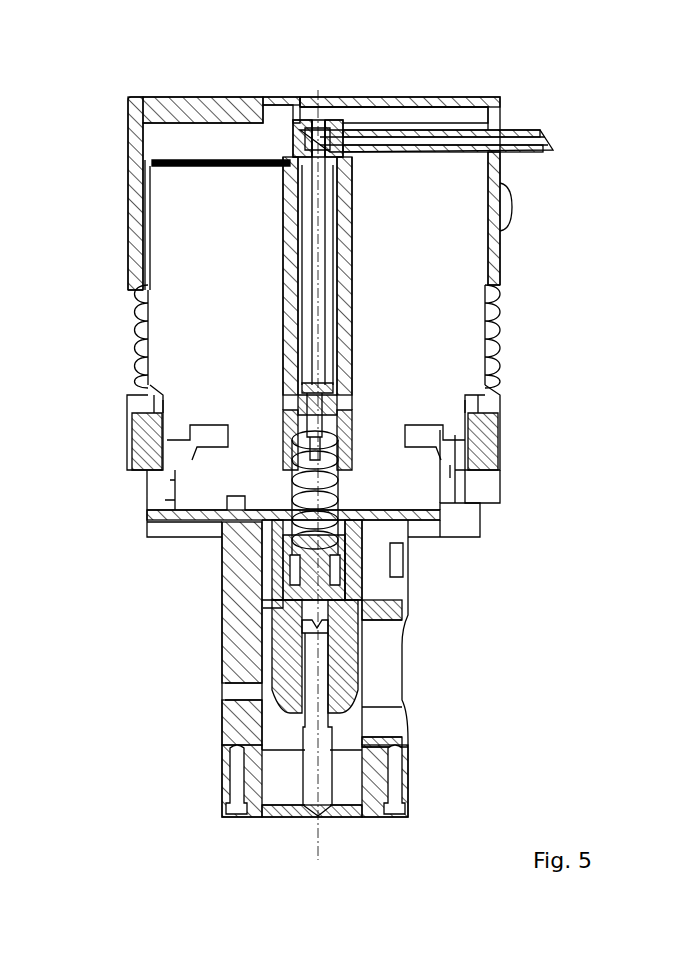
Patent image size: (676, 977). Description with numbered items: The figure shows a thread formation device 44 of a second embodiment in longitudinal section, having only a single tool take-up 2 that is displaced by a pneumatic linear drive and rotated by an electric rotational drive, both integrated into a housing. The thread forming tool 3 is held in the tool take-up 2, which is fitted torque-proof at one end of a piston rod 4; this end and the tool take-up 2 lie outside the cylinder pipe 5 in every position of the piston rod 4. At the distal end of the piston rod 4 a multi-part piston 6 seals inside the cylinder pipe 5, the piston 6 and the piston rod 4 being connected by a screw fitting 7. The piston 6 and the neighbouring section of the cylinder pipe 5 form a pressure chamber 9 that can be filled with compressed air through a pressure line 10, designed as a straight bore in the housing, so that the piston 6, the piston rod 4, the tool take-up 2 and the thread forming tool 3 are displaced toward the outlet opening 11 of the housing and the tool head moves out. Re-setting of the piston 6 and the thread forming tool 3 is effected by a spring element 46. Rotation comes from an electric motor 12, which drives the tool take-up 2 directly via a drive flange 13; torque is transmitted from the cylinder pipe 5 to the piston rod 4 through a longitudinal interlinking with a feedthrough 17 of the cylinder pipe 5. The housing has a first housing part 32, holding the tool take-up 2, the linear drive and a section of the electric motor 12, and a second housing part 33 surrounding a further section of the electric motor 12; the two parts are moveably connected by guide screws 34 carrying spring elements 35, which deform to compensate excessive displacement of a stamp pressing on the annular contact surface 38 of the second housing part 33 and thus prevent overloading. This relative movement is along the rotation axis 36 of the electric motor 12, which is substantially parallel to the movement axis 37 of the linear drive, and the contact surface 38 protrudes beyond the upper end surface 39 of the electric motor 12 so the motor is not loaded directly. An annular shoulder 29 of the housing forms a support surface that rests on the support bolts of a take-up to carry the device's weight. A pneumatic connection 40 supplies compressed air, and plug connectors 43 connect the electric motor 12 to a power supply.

The tool take-up 2 is at (358, 670).
The thread forming tool 3 is at (400, 793).
The piston rod 4 is at (446, 519).
The cylinder pipe 5 is at (260, 499).
The piston 6 is at (296, 412).
The screw fitting 7 is at (300, 442).
The pressure chamber 9 is at (318, 262).
The pressure line 10 is at (316, 158).
The outlet opening 11 is at (310, 822).
The electric motor 12 is at (178, 412).
The drive flange 13 is at (294, 557).
The feedthrough 17 is at (286, 554).
The annular shoulder 29 is at (484, 535).
The first housing part 32 is at (488, 452).
The second housing part 33 is at (130, 165).
The guide screw 34 is at (148, 400).
The spring element 35 is at (138, 300).
The rotation axis 36 is at (320, 96).
The movement axis 37 is at (317, 139).
The annular contact surface 38 is at (458, 98).
The upper end surface 39 is at (198, 155).
The pneumatic connection 40 is at (517, 145).
The plug connector 43 is at (500, 207).
The thread formation device 44 is at (105, 68).
The spring element 46 is at (455, 445).